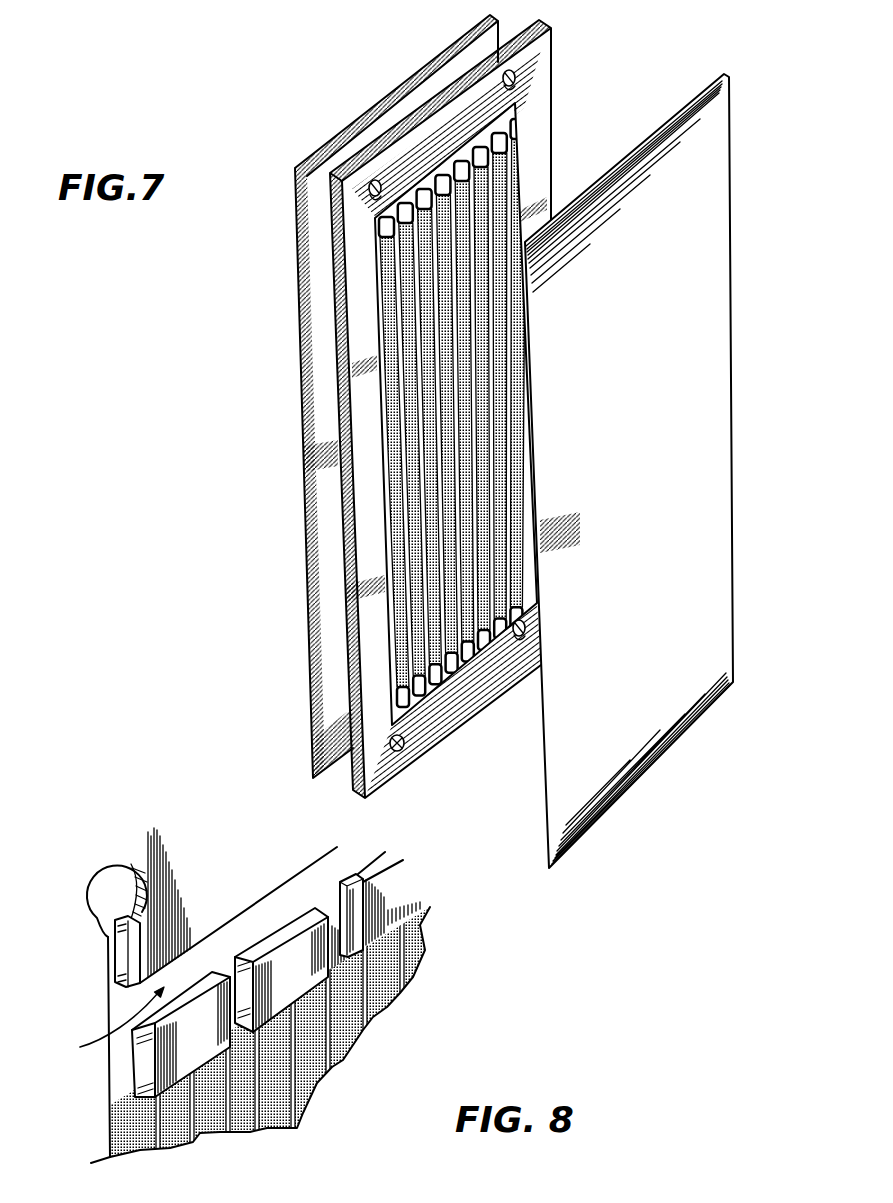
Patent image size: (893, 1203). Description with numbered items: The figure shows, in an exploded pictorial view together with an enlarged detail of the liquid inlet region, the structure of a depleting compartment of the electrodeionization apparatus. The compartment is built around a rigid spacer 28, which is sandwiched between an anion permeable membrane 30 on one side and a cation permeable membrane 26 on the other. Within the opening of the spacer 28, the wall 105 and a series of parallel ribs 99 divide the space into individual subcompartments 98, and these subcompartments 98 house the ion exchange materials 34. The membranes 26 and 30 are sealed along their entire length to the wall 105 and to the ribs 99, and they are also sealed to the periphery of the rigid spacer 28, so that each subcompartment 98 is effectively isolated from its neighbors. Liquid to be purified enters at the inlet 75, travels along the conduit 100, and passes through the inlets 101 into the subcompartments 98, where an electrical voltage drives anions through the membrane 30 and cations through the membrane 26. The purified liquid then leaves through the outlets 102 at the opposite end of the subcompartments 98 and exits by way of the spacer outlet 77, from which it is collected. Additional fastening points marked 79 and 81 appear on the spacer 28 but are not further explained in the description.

In FIG. 7, the cation permeable membrane 26 is at (681, 717).
In FIG. 7, the rigid spacer 28 is at (527, 62).
In FIG. 7, the anion permeable membrane 30 is at (407, 110).
In FIG. 7, the ion exchange materials 34 is at (390, 537).
In FIG. 8, the ion exchange materials 34 is at (343, 947).
In FIG. 7, the inlet 75 is at (373, 178).
In FIG. 8, the inlet 75 is at (107, 890).
In FIG. 7, the spacer outlet 77 is at (525, 645).
In FIG. 7, the screw 79 is at (513, 75).
In FIG. 7, the screw 81 is at (403, 742).
In FIG. 7, the subcompartments 98 is at (423, 415).
In FIG. 8, the subcompartments 98 is at (243, 1103).
In FIG. 7, the ribs 99 is at (482, 190).
In FIG. 8, the conduit 100 is at (99, 1026).
In FIG. 8, the inlets 101 is at (320, 897).
In FIG. 7, the outlets 102 is at (470, 655).
In FIG. 7, the wall 105 is at (536, 103).